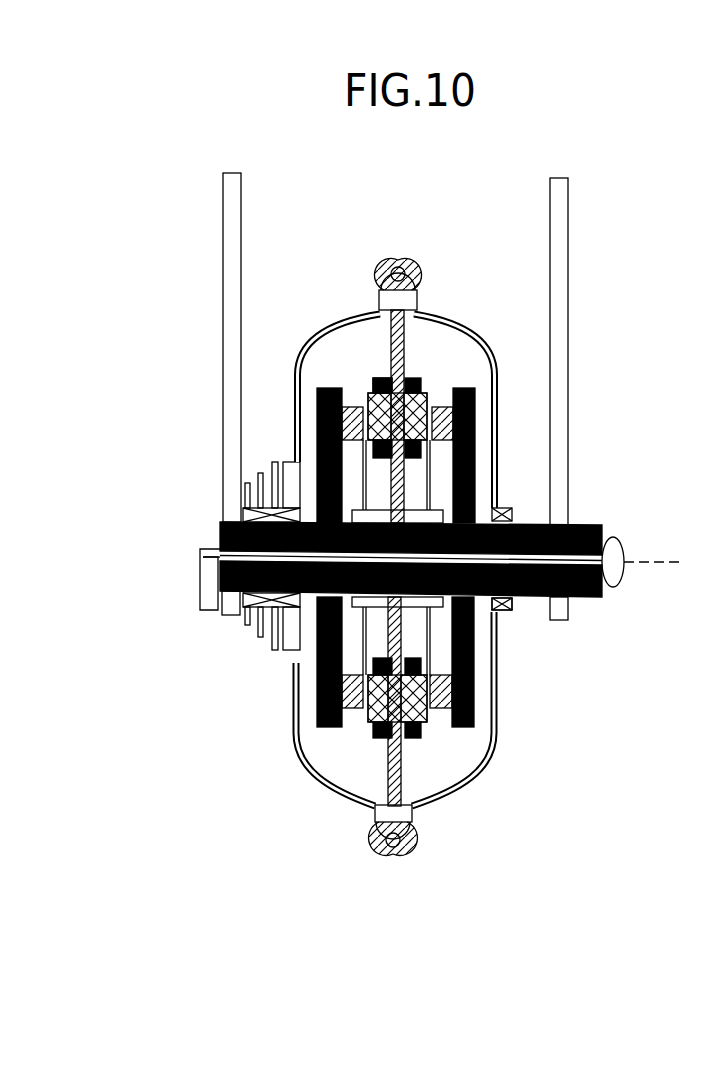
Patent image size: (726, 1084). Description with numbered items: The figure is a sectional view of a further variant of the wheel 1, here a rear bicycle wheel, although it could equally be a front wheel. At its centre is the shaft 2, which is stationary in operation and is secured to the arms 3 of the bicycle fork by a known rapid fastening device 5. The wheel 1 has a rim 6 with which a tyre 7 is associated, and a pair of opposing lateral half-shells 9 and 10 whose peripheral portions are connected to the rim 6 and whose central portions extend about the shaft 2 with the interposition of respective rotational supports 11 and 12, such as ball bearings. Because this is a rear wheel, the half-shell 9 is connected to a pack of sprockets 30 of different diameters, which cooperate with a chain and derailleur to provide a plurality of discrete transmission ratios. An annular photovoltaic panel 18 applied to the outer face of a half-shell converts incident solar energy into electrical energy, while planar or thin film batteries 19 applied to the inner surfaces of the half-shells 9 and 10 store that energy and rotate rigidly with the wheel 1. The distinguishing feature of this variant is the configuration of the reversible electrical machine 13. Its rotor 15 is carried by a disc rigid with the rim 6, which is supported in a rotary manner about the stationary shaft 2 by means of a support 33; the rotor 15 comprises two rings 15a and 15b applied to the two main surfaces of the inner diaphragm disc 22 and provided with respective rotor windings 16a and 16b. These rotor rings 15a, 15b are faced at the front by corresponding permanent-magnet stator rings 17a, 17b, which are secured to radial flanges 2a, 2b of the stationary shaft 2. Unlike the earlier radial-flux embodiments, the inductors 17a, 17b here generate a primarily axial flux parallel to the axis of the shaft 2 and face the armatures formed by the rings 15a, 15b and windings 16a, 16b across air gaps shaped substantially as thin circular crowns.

The wheel 1 is at (449, 256).
The shaft 2 is at (530, 519).
The radial flange 2a is at (313, 453).
The radial flange 2b is at (479, 448).
The arms of a fork 3 is at (223, 213).
The rapid fastening device 5 is at (184, 588).
The rim 6 is at (382, 262).
The tyre 7 is at (398, 257).
The lateral half-shell 9 is at (294, 368).
The lateral half-shell 10 is at (488, 338).
The rotational support 11 is at (236, 508).
The rotational support 12 is at (514, 604).
The reversible electrical machine 13 is at (373, 377).
The rotor 15 is at (415, 377).
The rotor ring 15a is at (355, 335).
The rotor ring 15b is at (428, 392).
The rotor winding 16a is at (382, 377).
The rotor winding 16b is at (421, 349).
The permanent-magnet stator ring 17a is at (316, 425).
The permanent-magnet stator ring 17b is at (476, 428).
The photovoltaic panel 18 is at (510, 385).
The planar or thin film battery 19 is at (454, 351).
The inner baffle or diaphragm 22 is at (366, 349).
The pack of sprockets 30 is at (247, 648).
The support 33 is at (499, 466).